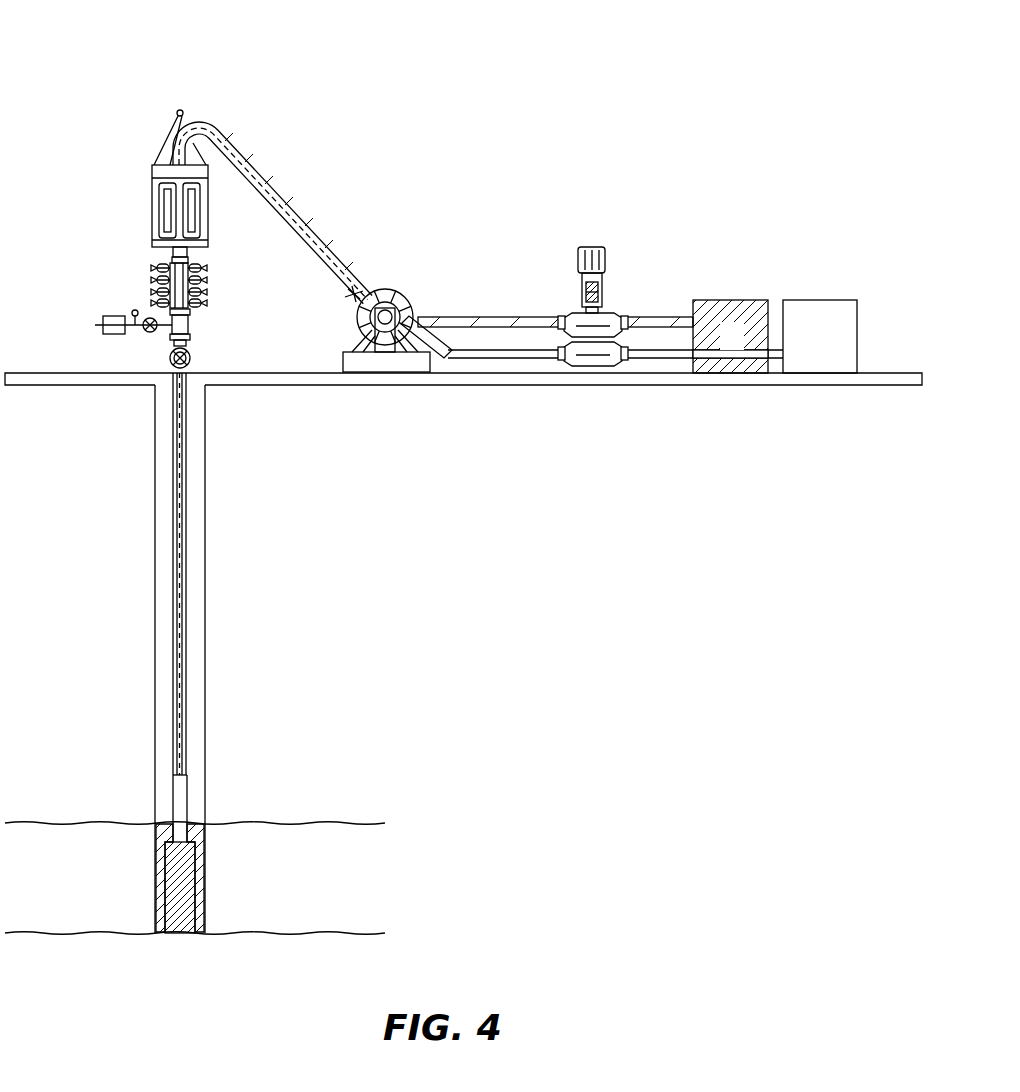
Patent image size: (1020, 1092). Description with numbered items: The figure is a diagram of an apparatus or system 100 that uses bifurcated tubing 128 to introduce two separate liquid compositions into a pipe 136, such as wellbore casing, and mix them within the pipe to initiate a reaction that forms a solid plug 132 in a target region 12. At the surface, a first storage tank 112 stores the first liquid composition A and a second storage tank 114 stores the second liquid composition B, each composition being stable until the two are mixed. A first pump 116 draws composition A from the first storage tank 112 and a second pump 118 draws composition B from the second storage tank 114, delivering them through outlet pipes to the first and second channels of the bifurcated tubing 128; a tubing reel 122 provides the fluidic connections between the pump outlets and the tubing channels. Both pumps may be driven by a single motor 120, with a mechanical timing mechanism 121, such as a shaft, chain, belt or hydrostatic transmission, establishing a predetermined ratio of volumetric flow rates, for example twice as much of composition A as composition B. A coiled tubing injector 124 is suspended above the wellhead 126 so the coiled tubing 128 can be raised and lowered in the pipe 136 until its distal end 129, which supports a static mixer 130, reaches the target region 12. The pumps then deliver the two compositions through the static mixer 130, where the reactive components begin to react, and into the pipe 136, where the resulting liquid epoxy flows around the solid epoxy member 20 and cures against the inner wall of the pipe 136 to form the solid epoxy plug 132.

The apparatus or system 100 is at (361, 86).
The target region 12 is at (379, 881).
The solid epoxy member 20 is at (187, 898).
The first storage tank 112 is at (822, 300).
The second storage tank 114 is at (732, 300).
The first pump 116 is at (570, 347).
The second pump 118 is at (570, 314).
The motor 120 is at (592, 247).
The mechanical timing mechanism 121 is at (606, 298).
The tubing reel 122 is at (404, 298).
The coiled tubing injector 124 is at (152, 209).
The wellhead 126 is at (152, 283).
The bifurcated tubing 128 is at (186, 530).
The distal end 129 is at (187, 773).
The static mixer 130 is at (173, 792).
The solid plug 132 is at (155, 903).
The pipe 136 is at (205, 645).